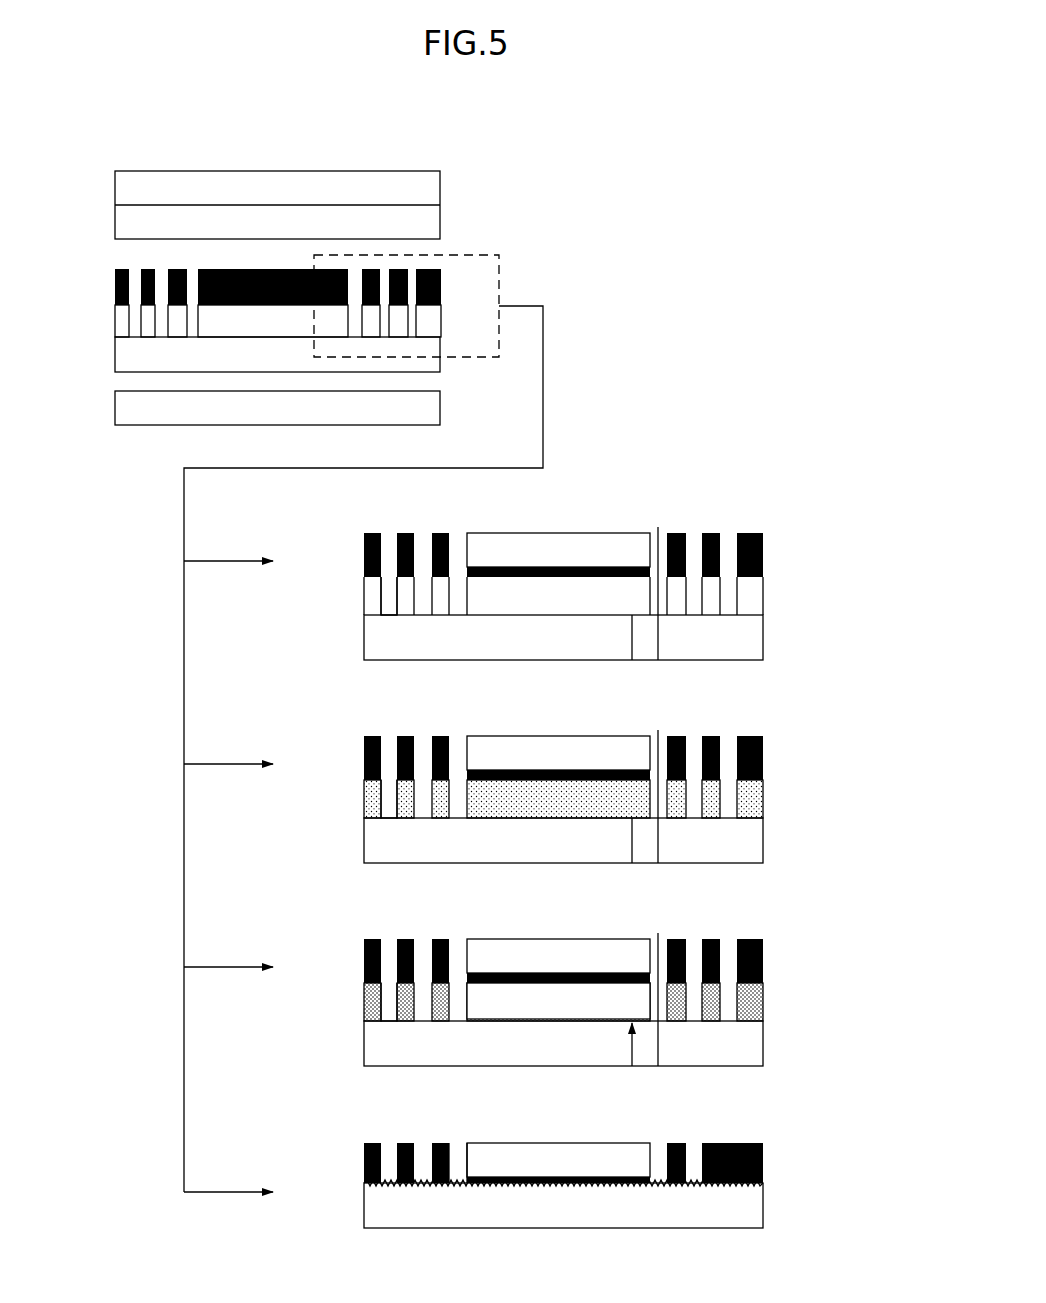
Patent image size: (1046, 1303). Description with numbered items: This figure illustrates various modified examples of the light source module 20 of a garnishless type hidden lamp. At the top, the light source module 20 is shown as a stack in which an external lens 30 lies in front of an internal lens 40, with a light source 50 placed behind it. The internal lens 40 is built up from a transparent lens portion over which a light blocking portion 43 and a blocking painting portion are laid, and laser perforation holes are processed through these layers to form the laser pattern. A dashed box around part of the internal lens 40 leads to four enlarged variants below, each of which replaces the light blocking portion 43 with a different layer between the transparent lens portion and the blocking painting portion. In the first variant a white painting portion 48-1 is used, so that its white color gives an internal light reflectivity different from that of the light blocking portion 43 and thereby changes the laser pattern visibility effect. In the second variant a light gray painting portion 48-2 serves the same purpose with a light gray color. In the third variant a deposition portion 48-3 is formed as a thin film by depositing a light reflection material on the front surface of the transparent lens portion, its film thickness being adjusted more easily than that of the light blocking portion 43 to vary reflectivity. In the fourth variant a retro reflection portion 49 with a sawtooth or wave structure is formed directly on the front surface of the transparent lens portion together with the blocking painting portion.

The light source module 20 is at (82, 147).
The external lens 30 is at (345, 171).
The internal lens 40 is at (457, 285).
The light blocking portion 43 is at (120, 318).
The white painting portion 48-1 is at (750, 598).
The light gray painting portion 48-2 is at (753, 801).
The deposition portion 48-3 is at (753, 1004).
The retro reflection portion 49 is at (737, 1186).
The light source 50 is at (120, 412).